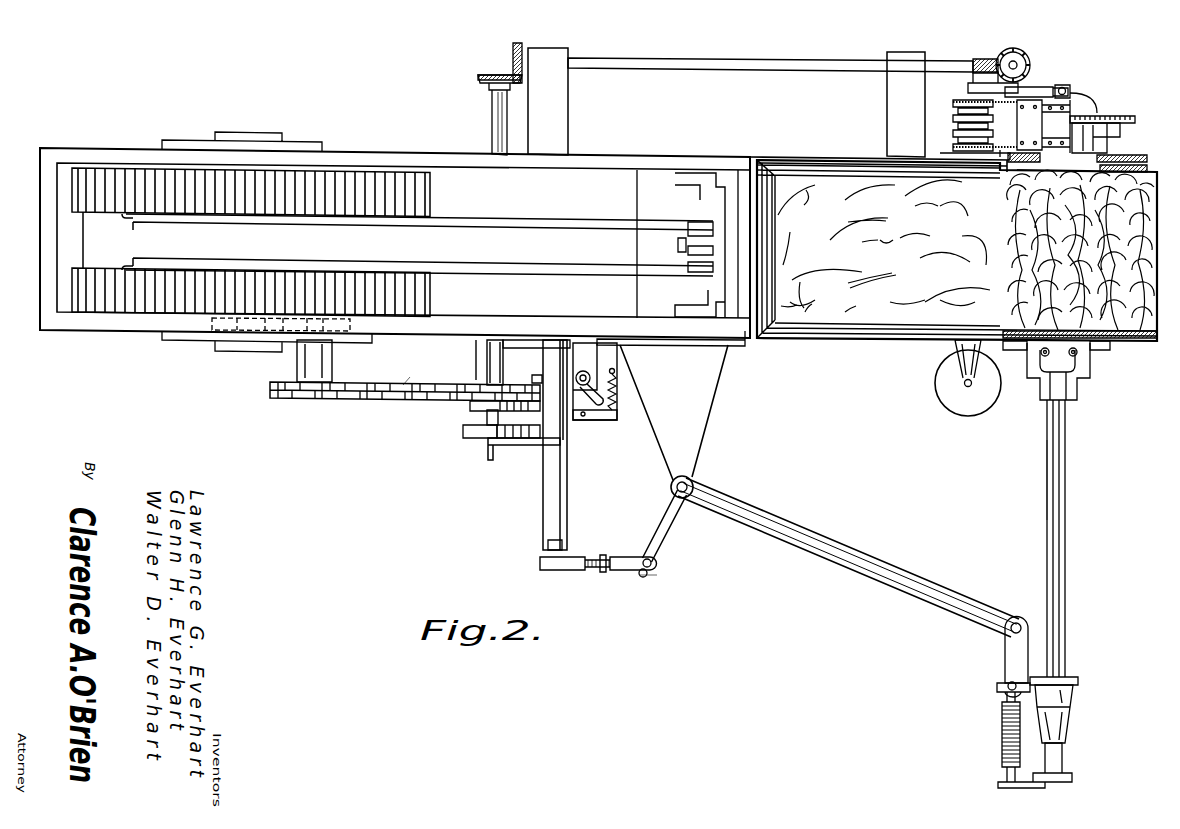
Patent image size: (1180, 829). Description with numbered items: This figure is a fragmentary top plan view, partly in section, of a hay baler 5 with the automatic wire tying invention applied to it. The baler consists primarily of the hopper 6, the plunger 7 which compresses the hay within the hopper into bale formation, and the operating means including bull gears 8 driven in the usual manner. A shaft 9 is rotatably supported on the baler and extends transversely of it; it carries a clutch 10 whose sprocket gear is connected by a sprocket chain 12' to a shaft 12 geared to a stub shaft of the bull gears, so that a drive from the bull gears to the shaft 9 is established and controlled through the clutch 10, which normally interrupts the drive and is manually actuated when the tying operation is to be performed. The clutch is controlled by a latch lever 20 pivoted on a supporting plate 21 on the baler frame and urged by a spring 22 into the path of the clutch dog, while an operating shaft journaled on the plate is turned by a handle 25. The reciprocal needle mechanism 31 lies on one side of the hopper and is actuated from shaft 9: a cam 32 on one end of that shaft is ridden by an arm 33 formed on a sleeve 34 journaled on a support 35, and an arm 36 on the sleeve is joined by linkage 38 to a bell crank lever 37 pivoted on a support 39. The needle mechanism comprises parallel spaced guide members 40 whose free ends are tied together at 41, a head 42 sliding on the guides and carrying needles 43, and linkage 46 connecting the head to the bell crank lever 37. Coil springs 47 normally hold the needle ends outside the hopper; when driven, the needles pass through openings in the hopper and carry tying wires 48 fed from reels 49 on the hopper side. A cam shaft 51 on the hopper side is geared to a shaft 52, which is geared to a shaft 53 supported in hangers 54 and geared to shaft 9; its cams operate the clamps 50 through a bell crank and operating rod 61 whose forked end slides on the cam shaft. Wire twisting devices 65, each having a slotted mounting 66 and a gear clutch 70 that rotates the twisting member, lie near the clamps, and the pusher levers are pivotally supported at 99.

The hay baler 5 is at (689, 151).
The hopper 6 is at (838, 333).
The plunger 7 is at (708, 285).
The bull gears 8 is at (350, 283).
The shaft 9 is at (492, 113).
The clutch 10 is at (455, 412).
The shaft 12 is at (341, 361).
The sprocket chain 12' is at (417, 370).
The latch lever 20 is at (598, 420).
The supporting plate 21 is at (618, 359).
The spring 22 is at (617, 393).
The handle 25 is at (606, 379).
The needle mechanism 31 is at (1040, 491).
The cam 32 is at (465, 432).
The arm 33 is at (511, 448).
The sleeve 34 is at (550, 502).
The support 35 is at (552, 359).
The arm 36 is at (566, 555).
The bell crank lever 37 is at (804, 541).
The linkage 38 is at (619, 576).
The support 39 is at (712, 400).
The guide members 40 is at (1064, 651).
The tied free ends 41 is at (1070, 776).
The head 42 is at (1075, 690).
The needles 43 is at (1061, 533).
The linkage 46 is at (1020, 655).
The coil springs 47 is at (1002, 730).
The tying wires 48 is at (1031, 346).
The reels 49 is at (971, 412).
The clamp 50 is at (1071, 82).
The cam shaft 51 is at (985, 115).
The shaft 52 is at (1022, 65).
The shaft 53 is at (757, 52).
The hangers 54 is at (887, 104).
The operating rod 61 is at (1030, 96).
The wire twisting or tying devices 65 is at (1050, 115).
The slotted mounting 66 is at (1122, 162).
The clutch 70 is at (1113, 109).
The pivot 99 is at (953, 113).